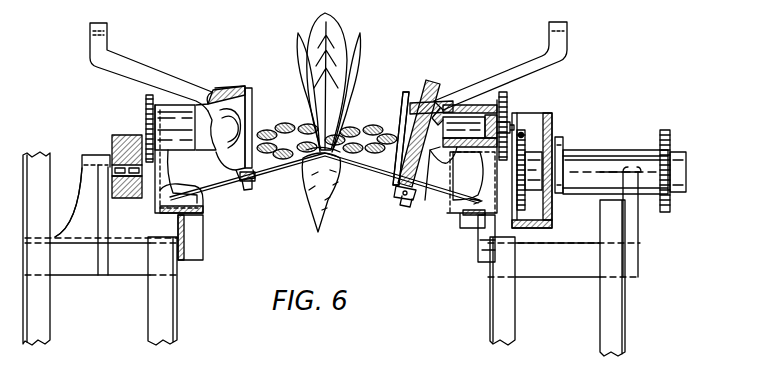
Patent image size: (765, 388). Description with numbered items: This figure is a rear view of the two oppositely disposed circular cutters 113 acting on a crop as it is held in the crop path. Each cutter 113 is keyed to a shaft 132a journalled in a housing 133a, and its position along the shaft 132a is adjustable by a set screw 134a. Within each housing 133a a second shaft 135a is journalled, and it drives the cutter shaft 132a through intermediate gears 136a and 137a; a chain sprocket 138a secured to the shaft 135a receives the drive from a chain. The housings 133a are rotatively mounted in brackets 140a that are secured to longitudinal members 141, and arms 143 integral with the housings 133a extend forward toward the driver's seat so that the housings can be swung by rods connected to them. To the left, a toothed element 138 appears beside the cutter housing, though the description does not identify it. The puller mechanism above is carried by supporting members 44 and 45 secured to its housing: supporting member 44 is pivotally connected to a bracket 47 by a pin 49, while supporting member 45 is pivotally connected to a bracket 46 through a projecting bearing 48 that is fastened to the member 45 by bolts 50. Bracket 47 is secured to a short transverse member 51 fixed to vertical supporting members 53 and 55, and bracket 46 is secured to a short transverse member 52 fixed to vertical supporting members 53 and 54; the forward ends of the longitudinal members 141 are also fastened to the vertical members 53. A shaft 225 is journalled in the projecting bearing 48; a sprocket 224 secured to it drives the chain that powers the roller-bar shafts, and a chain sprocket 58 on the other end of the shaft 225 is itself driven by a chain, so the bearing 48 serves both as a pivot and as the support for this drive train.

The arm 143 is at (90, 40).
The toothed strip 138 is at (147, 96).
The housing 133a is at (244, 86).
The bracket 140a is at (195, 203).
The supporting member 44 is at (137, 135).
The bracket 47 is at (104, 157).
The pin 49 is at (82, 168).
The vertical supporting member 55 is at (50, 308).
The vertical supporting member 53 is at (152, 316).
The short transverse member 51 is at (124, 268).
The short transverse member 52 is at (575, 277).
The vertical supporting member 54 is at (600, 330).
The longitudinal member 141 is at (204, 243).
The circular cutter 113 is at (272, 168).
The shaft 132a is at (438, 90).
The intermediate gear 136a is at (468, 92).
The shaft 135a is at (445, 145).
The intermediate gear 137a is at (455, 160).
The set screw 134a is at (396, 200).
The chain sprocket 138a is at (508, 98).
The supporting member 45 is at (553, 120).
The sprocket 224 is at (521, 132).
The bolt 50 is at (560, 138).
The projecting bearing 48 is at (580, 156).
The shaft 225 is at (612, 156).
The bracket 46 is at (646, 150).
The chain sprocket 58 is at (669, 135).